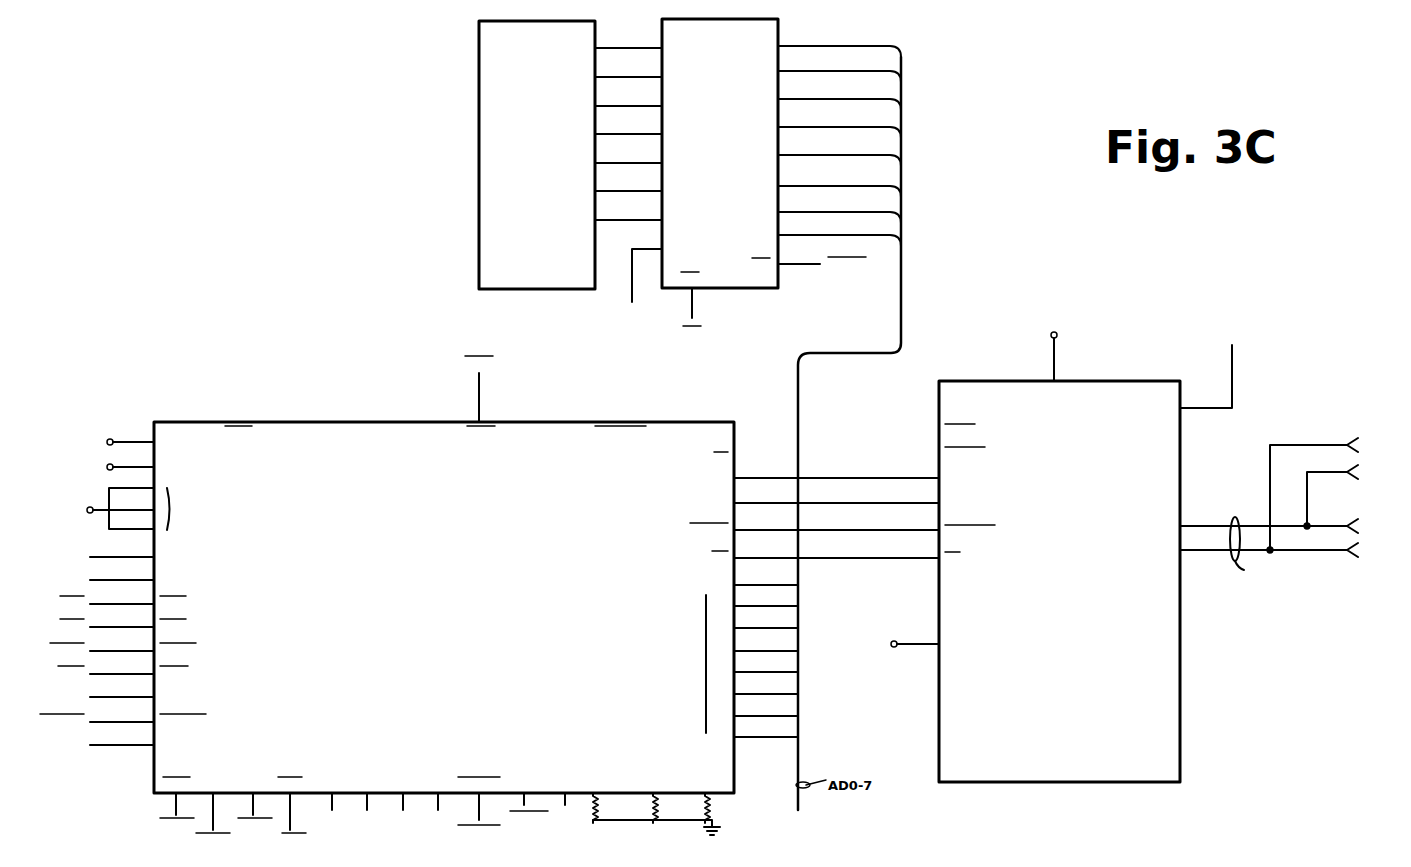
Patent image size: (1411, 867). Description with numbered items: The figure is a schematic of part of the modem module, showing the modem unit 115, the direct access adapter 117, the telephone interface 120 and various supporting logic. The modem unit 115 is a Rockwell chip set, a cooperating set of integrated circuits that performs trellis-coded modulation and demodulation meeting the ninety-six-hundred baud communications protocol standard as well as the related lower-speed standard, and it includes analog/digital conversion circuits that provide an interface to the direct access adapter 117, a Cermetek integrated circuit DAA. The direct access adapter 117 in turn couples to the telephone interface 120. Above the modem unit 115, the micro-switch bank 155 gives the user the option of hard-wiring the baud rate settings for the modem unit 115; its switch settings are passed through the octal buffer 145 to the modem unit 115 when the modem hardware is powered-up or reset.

The micro-switch bank 155 is at (515, 290).
The octal buffer 145 is at (762, 288).
The modem unit 115 is at (710, 422).
The direct access adapter 117 is at (963, 782).
The telephone interface 120 is at (1280, 510).